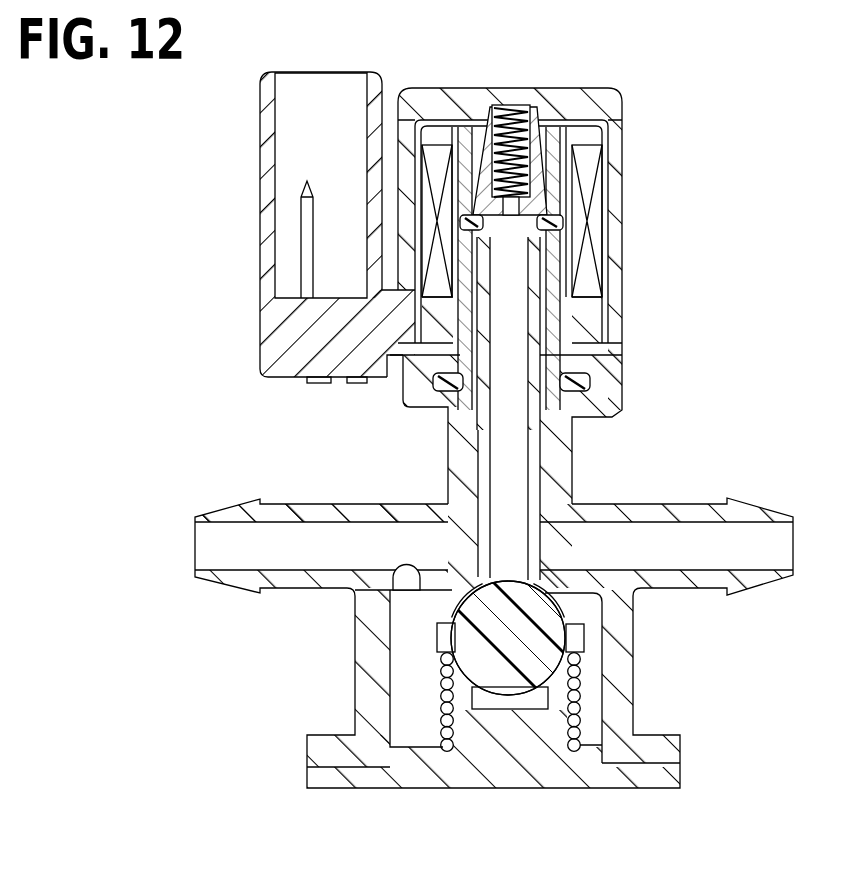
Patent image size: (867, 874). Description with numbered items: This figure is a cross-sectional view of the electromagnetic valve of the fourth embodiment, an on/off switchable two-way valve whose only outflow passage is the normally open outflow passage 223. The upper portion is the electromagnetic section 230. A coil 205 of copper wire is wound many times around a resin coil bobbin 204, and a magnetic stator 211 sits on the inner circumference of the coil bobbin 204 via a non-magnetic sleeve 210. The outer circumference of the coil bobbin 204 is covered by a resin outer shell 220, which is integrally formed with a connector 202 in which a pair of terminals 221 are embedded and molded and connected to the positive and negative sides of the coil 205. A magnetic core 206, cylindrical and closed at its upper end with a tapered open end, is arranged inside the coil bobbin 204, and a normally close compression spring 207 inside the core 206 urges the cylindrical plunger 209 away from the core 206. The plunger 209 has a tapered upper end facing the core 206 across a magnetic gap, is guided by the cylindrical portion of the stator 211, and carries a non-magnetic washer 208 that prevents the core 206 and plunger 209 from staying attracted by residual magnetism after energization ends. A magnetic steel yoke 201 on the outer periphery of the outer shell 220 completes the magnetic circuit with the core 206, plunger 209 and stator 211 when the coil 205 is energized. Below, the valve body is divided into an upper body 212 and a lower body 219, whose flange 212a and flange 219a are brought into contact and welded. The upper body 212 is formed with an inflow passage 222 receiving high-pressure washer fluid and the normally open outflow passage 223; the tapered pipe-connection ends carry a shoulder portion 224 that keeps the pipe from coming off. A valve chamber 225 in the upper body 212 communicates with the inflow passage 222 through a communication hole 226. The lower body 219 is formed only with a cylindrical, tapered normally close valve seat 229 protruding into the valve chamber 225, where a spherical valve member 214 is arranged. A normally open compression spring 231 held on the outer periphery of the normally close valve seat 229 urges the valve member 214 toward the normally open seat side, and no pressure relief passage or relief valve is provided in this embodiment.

The yoke 201 is at (582, 100).
The connector 202 is at (267, 221).
The coil bobbin 204 is at (592, 310).
The coil 205 is at (596, 192).
The core 206 is at (533, 118).
The normally close compression spring 207 is at (509, 112).
The washer 208 is at (578, 232).
The plunger 209 is at (560, 340).
The sleeve 210 is at (580, 262).
The stator 211 is at (612, 362).
The upper body 212 is at (574, 462).
The flange of the upper body 212a is at (666, 751).
The valve member 214 is at (548, 609).
The lower body 219 is at (510, 790).
The flange of the lower body 219a is at (666, 777).
The outer shell 220 is at (606, 158).
The terminals 221 is at (304, 184).
The inflow passage 222 is at (232, 566).
The normally open outflow passage 223 is at (745, 524).
The shoulder portion 224 is at (268, 503).
The valve chamber 225 is at (410, 640).
The communication hole 226 is at (407, 584).
The normally close valve seat 229 is at (462, 695).
The electromagnetic section 230 is at (428, 80).
The normally open compression spring 231 is at (576, 668).